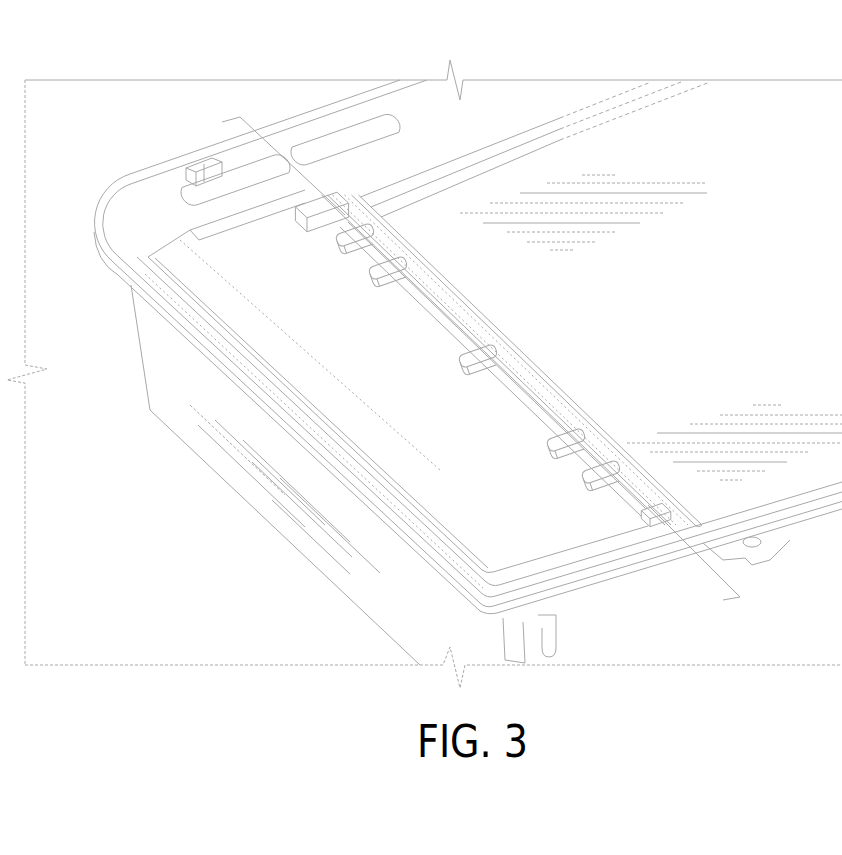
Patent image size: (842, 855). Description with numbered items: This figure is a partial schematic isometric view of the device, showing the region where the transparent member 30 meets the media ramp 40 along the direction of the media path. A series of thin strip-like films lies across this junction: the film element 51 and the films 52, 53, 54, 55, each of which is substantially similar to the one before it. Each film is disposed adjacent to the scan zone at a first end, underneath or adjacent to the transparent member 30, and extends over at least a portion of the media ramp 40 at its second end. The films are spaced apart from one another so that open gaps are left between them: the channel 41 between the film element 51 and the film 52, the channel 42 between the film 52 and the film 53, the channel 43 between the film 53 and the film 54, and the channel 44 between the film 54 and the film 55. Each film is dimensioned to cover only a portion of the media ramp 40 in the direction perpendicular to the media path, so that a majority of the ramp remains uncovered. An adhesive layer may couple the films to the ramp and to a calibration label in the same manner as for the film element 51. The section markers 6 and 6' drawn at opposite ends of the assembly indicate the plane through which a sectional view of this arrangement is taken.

The section line 6-6' 6 is at (263, 166).
The section line 6-6' (opposite end) 6' is at (694, 564).
The transparent member 30 is at (349, 353).
The media ramp 40 is at (540, 385).
The channel 41 is at (599, 436).
The channel 42 is at (565, 399).
The channel 43 is at (447, 294).
The channel 44 is at (385, 233).
The film element 51 is at (590, 484).
The film 52 is at (555, 449).
The film 53 is at (467, 364).
The film 54 is at (377, 276).
The film 55 is at (344, 246).